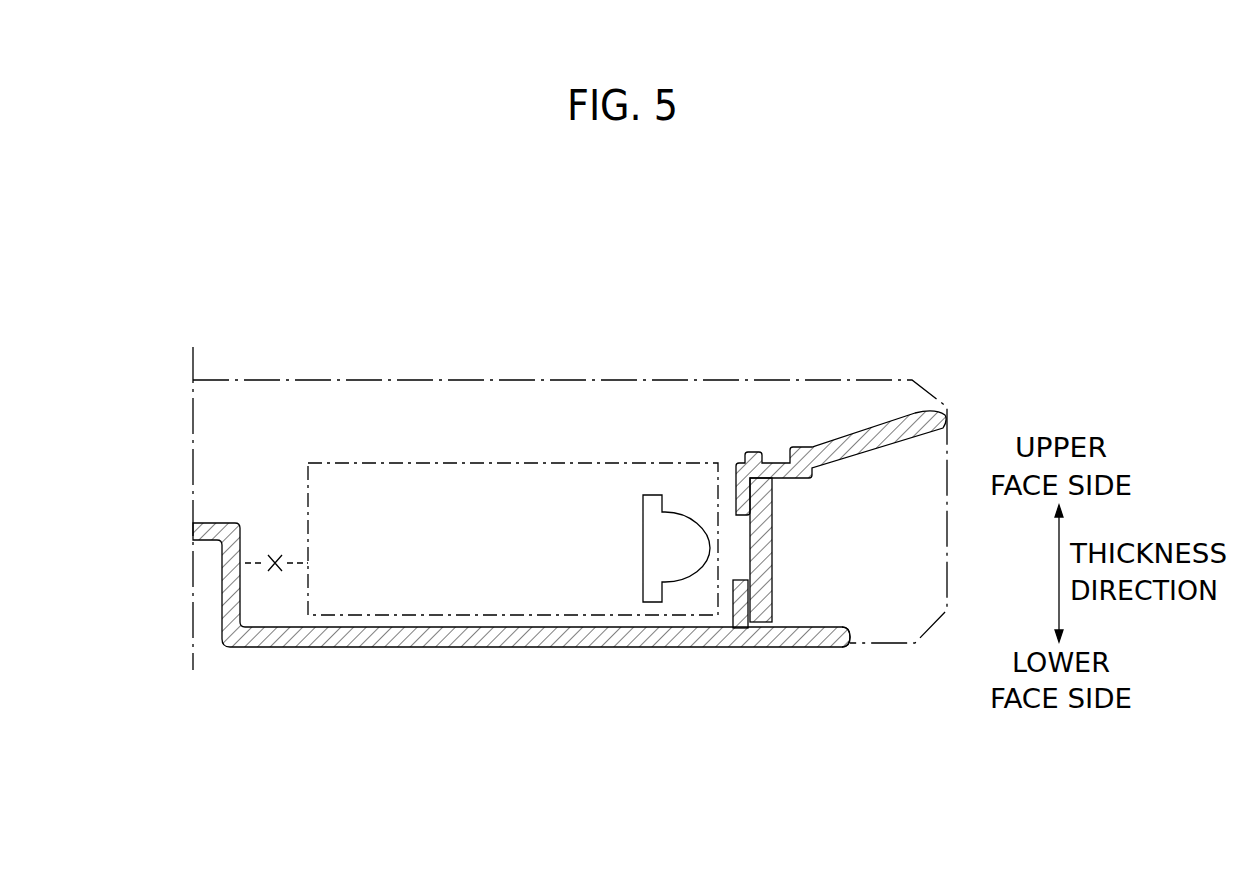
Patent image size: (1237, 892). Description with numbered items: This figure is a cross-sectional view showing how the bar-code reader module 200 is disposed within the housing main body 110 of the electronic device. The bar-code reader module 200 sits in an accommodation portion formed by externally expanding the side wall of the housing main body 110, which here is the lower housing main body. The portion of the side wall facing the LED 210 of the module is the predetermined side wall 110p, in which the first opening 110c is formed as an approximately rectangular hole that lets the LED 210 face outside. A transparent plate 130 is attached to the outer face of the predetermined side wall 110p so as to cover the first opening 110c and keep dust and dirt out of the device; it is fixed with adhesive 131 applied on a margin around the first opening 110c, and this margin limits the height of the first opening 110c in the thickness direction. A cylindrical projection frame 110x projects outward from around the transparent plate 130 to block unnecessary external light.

The housing main body 110 is at (422, 643).
The projection frame 110x is at (787, 638).
The predetermined side wall 110p is at (732, 596).
The first opening 110c is at (651, 667).
The transparent plate 130 is at (846, 586).
The adhesive 131 is at (745, 625).
The bar-code reader module 200 is at (403, 463).
The LED 210 is at (707, 560).